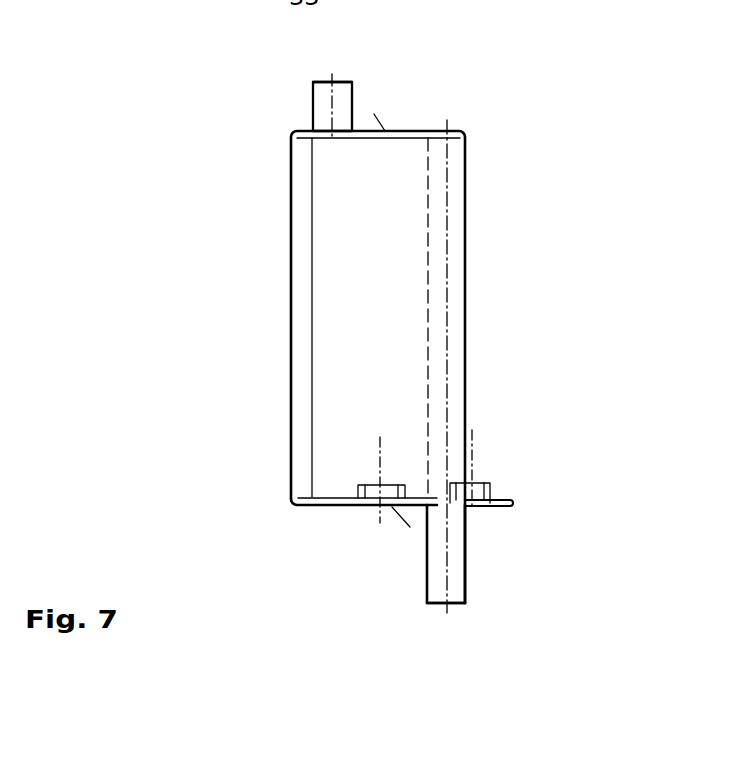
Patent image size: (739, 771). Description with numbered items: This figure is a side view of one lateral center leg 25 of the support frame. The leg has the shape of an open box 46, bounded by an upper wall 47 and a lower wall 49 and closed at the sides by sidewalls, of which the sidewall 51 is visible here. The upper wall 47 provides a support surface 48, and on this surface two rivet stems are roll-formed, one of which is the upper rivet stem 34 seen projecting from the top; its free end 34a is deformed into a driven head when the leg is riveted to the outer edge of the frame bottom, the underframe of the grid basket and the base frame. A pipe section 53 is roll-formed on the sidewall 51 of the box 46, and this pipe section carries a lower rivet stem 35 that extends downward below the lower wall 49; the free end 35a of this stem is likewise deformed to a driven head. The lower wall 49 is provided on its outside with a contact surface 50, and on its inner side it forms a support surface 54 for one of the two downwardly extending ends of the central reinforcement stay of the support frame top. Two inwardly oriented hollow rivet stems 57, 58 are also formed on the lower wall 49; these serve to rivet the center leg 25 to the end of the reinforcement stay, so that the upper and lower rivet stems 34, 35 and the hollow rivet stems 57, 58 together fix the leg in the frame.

The lateral center leg 25 is at (483, 162).
The upper rivet stem 34 is at (325, 107).
The free end of upper rivet stem 34a is at (317, 82).
The lower rivet stem 35 is at (455, 563).
The free end of lower rivet stem 35a is at (458, 605).
The open box 46 is at (370, 245).
The upper wall 47 is at (410, 137).
The support surface 48 is at (385, 131).
The lower wall 49 is at (332, 505).
The contact surface 50 is at (392, 507).
The sidewall 51 is at (342, 350).
The pipe section 53 is at (458, 330).
The support surface 54 is at (320, 483).
The hollow rivet stem 57 is at (410, 487).
The hollow rivet stem 58 is at (490, 490).